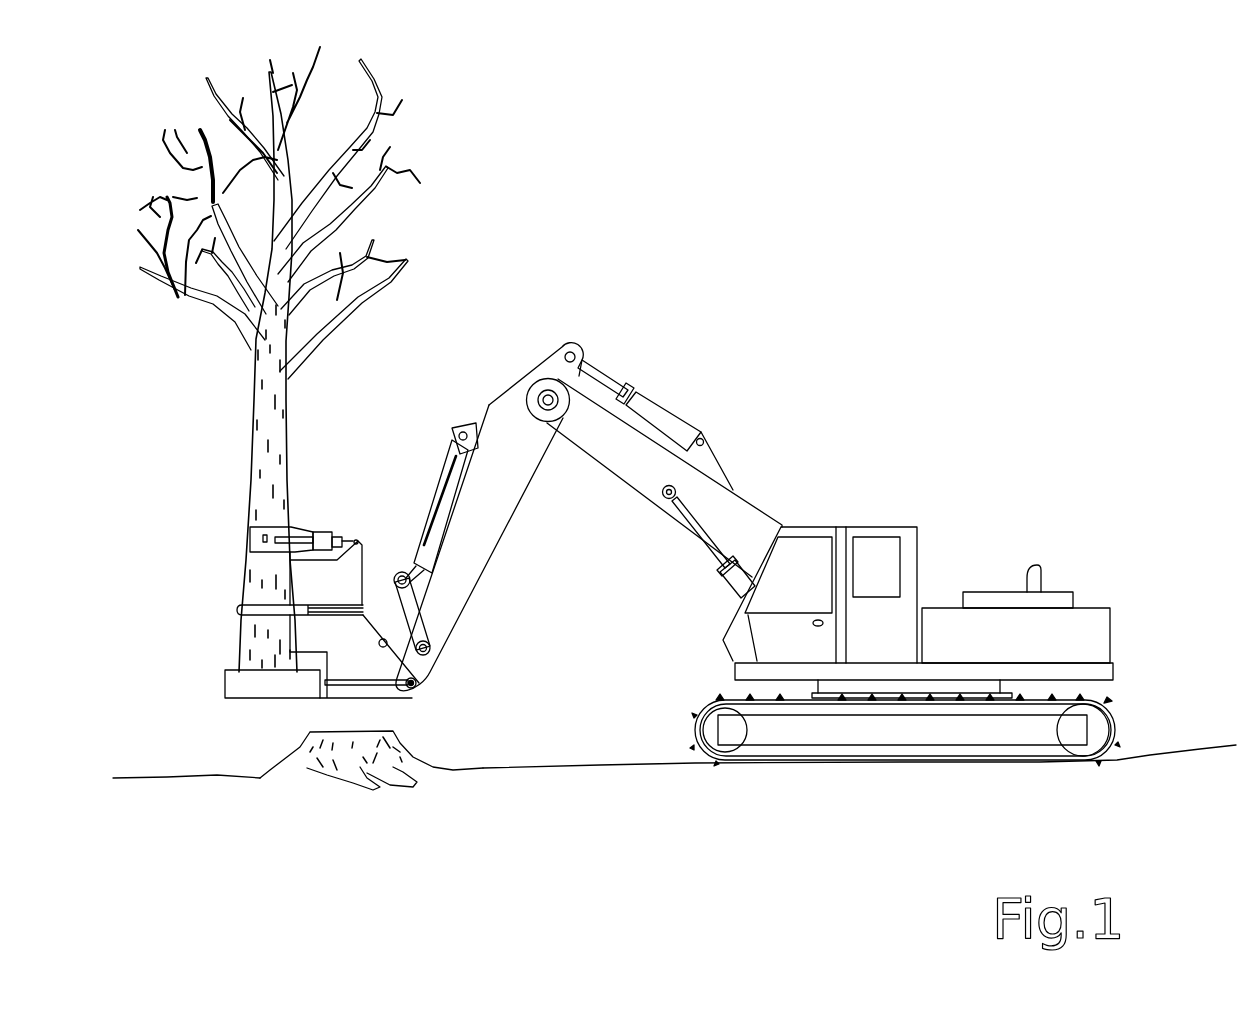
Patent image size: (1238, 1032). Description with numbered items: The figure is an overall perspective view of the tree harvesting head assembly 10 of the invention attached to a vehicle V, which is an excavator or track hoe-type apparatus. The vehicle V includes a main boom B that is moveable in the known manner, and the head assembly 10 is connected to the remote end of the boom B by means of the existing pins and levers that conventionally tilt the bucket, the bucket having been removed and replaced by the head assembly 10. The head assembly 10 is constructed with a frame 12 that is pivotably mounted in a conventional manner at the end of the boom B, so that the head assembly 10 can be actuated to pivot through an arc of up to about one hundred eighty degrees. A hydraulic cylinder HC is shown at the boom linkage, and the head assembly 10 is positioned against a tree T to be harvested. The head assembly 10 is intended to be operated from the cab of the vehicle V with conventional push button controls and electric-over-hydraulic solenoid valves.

The tree T is at (250, 497).
The tree harvesting head assembly 10 is at (347, 494).
The frame 12 is at (372, 667).
The hydraulic cylinder HC is at (445, 472).
The main boom B is at (516, 467).
The vehicle V is at (853, 502).